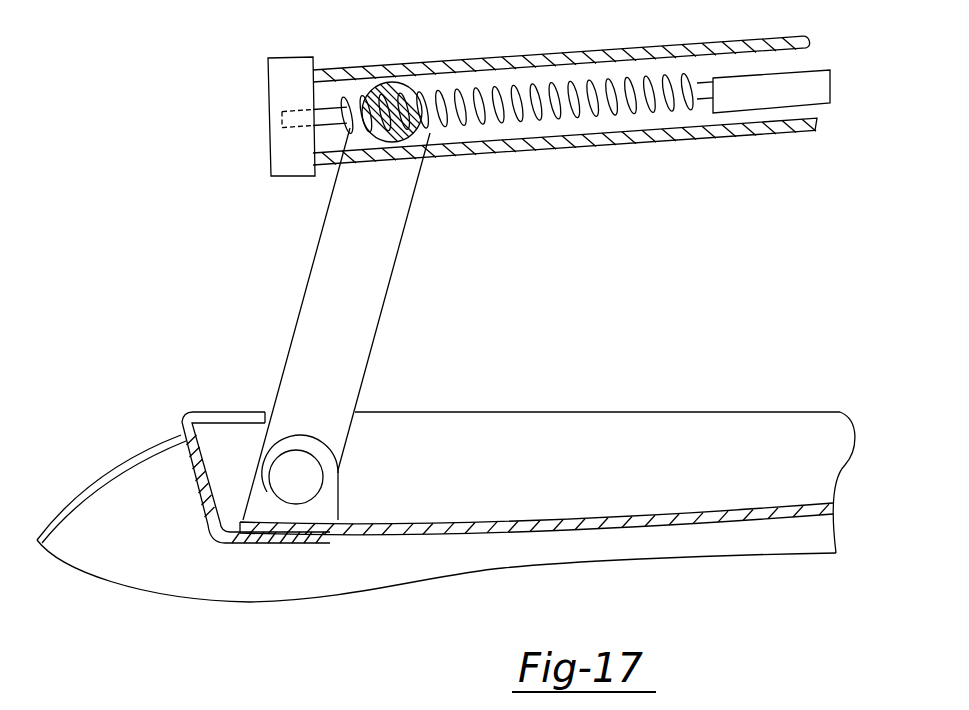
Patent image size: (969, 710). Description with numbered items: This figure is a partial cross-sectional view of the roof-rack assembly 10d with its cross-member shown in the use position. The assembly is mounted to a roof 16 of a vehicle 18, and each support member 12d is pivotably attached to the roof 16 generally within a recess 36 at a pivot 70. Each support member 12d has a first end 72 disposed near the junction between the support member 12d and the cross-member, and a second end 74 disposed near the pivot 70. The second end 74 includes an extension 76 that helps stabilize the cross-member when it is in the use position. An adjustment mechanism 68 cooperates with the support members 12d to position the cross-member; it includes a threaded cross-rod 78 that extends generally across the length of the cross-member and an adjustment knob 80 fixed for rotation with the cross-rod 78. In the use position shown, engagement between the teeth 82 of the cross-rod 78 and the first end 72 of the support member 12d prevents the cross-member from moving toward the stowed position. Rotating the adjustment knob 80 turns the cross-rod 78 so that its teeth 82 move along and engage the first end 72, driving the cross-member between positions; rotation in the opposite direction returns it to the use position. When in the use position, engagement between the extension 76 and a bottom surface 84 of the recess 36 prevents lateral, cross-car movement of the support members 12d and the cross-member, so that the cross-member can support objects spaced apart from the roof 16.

The roof-rack assembly 10d is at (165, 272).
The support member 12d is at (402, 253).
The roof 16 is at (613, 412).
The vehicle 18 is at (100, 473).
The recess 36 is at (700, 445).
The adjustment mechanism 68 is at (337, 98).
The pivot 70 is at (303, 482).
The first end 72 is at (352, 143).
The second end 74 is at (252, 463).
The extension 76 is at (180, 422).
The threaded cross-rod 78 is at (673, 110).
The adjustment knob 80 is at (280, 97).
The teeth 82 is at (470, 92).
The bottom surface 84 is at (237, 527).